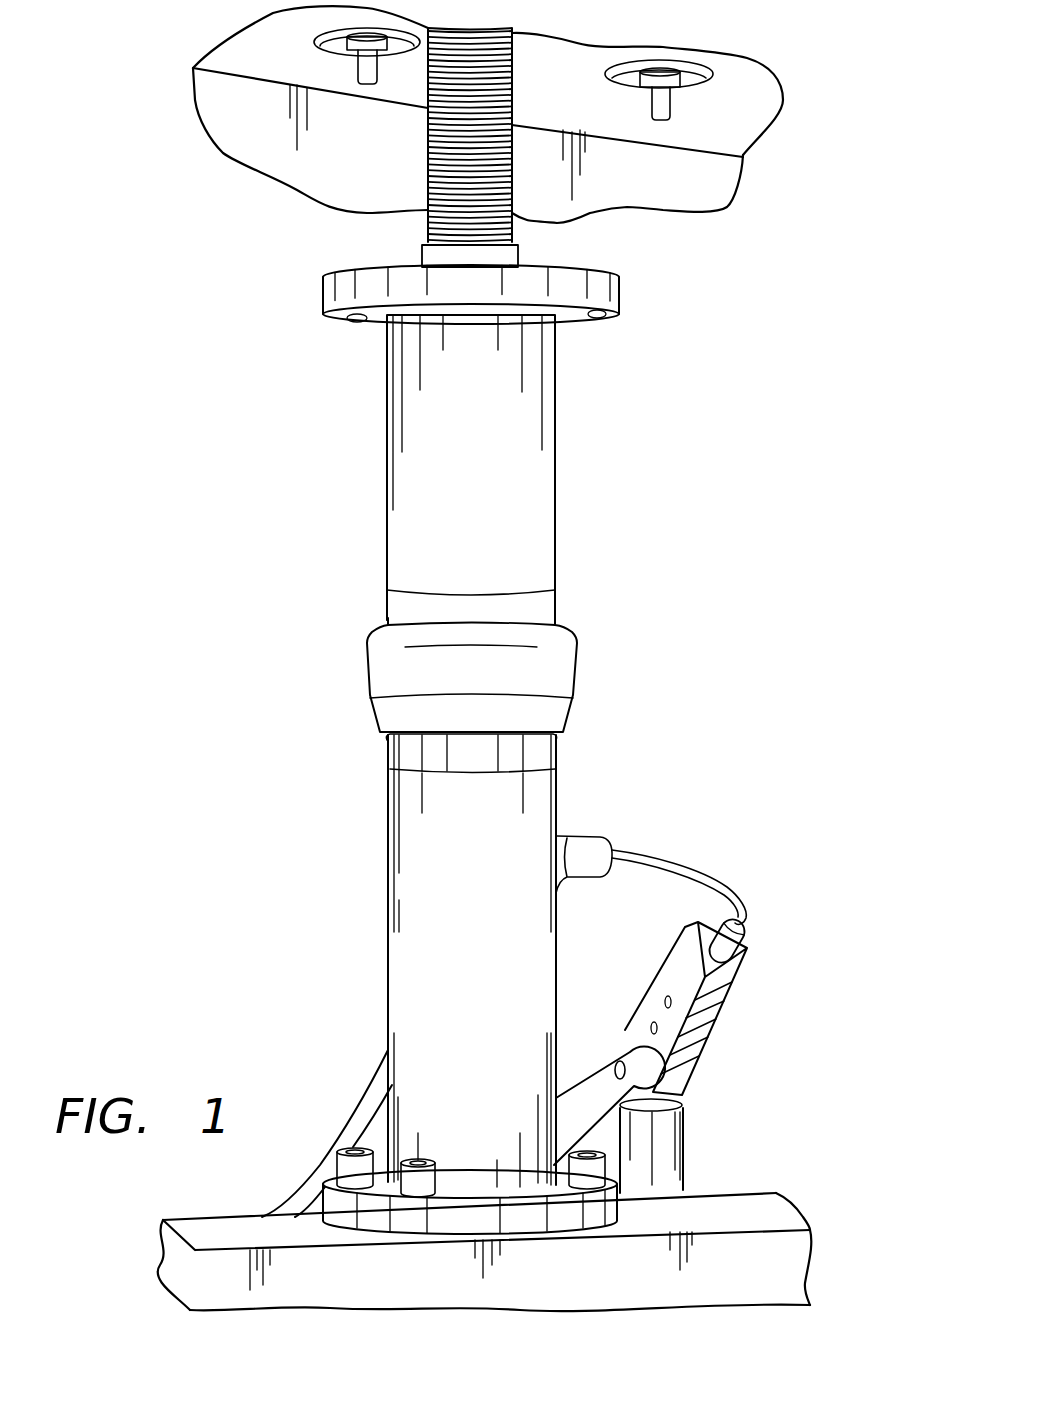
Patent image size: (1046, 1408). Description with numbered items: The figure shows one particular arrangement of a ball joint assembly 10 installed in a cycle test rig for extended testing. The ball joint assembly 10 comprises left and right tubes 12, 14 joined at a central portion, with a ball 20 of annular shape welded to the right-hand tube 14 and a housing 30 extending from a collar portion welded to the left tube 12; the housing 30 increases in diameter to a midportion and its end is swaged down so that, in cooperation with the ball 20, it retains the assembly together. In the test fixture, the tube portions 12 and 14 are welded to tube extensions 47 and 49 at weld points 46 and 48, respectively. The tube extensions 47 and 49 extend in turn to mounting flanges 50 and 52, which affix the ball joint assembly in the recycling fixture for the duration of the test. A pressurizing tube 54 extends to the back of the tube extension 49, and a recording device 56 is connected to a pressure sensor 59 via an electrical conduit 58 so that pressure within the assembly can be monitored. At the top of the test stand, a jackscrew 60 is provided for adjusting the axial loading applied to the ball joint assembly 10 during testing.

The ball joint assembly 10 is at (348, 751).
The left tube 12 is at (388, 612).
The right tube 14 is at (390, 750).
The ball 20 is at (387, 728).
The housing 30 is at (367, 672).
The weld point 46 is at (395, 595).
The tube extension 47 is at (405, 480).
The weld point 48 is at (393, 773).
The tube extension 49 is at (395, 920).
The mounting flange 50 is at (325, 300).
The mounting flange 52 is at (332, 1203).
The pressurizing tube 54 is at (358, 1098).
The recording device 56 is at (680, 947).
The electrical conduit 58 is at (657, 852).
The pressure sensor 59 is at (570, 838).
The jackscrew 60 is at (428, 168).